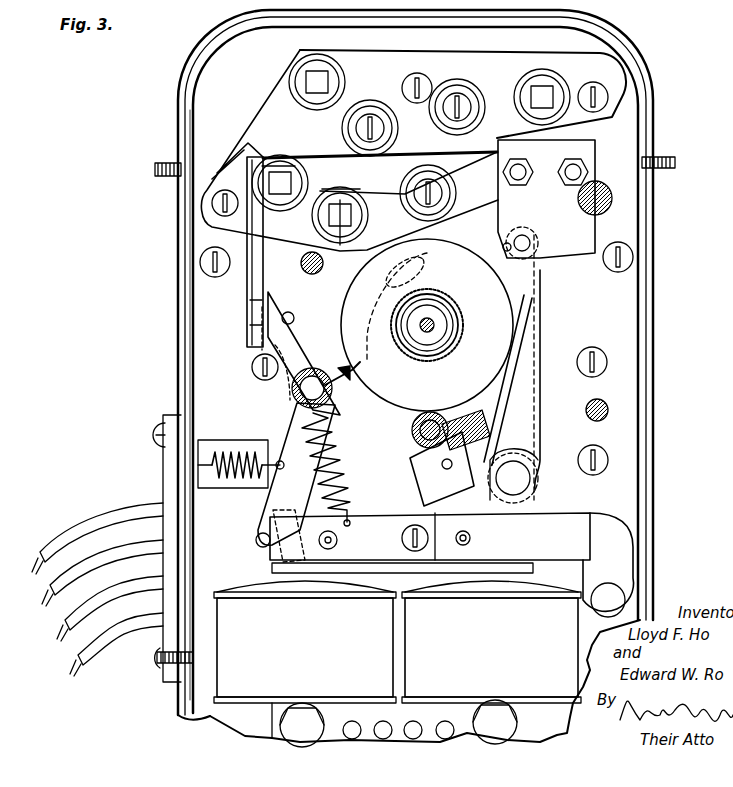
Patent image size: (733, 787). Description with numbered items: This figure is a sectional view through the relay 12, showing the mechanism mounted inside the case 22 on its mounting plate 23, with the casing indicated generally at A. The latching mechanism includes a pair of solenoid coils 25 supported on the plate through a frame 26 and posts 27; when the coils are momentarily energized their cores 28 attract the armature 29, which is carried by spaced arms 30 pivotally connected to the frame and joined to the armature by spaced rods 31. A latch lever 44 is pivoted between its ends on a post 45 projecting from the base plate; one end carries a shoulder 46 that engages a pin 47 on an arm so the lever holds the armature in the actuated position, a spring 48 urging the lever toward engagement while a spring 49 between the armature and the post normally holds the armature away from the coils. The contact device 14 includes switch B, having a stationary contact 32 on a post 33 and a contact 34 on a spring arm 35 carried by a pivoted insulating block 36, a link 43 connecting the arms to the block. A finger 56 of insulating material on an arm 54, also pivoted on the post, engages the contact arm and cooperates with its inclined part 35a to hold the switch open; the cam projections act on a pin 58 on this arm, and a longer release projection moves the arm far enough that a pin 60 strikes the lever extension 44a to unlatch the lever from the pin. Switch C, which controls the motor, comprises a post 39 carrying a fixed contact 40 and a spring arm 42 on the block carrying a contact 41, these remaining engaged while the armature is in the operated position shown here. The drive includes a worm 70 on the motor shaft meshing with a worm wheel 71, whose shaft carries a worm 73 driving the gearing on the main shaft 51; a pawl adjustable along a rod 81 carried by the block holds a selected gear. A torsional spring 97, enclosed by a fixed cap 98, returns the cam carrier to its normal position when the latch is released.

The casing A is at (665, 322).
The switch B is at (261, 149).
The switch C is at (355, 221).
The relay 12 is at (182, 112).
The contact device 14 is at (350, 375).
The case 22 is at (183, 317).
The mounting plate 23 is at (230, 333).
The solenoid coils 25 is at (397, 668).
The frame 26 is at (390, 742).
The posts 27 is at (305, 745).
The cores 28 is at (306, 595).
The armature 29 is at (380, 575).
The arms 30 is at (430, 536).
The rods 31 is at (470, 538).
The stationary contact 32 is at (305, 167).
The post 33 is at (280, 196).
The contact 34 is at (275, 165).
The spring arm 35 is at (320, 157).
The inclined part 35a is at (260, 165).
The block 36 is at (580, 143).
The post 39 is at (342, 240).
The fixed contact 40 is at (330, 213).
The contact 41 is at (345, 191).
The spring arm 42 is at (386, 191).
The link 43 is at (541, 393).
The lever 44 is at (296, 482).
The extension 44a is at (272, 348).
The post 45 is at (300, 395).
The shoulder 46 is at (255, 540).
The pin 47 is at (257, 546).
The spring 48 is at (240, 475).
The spring 49 is at (350, 470).
The shaft 51 is at (432, 318).
The arm 54 is at (275, 302).
The finger 56 is at (248, 160).
The pin 58 is at (420, 268).
The pin 60 is at (295, 320).
The worm 70 is at (412, 428).
The worm wheel 71 is at (487, 425).
The worm 73 is at (505, 350).
The rod 81 is at (531, 239).
The spring 97 is at (432, 350).
The cap 98 is at (463, 345).